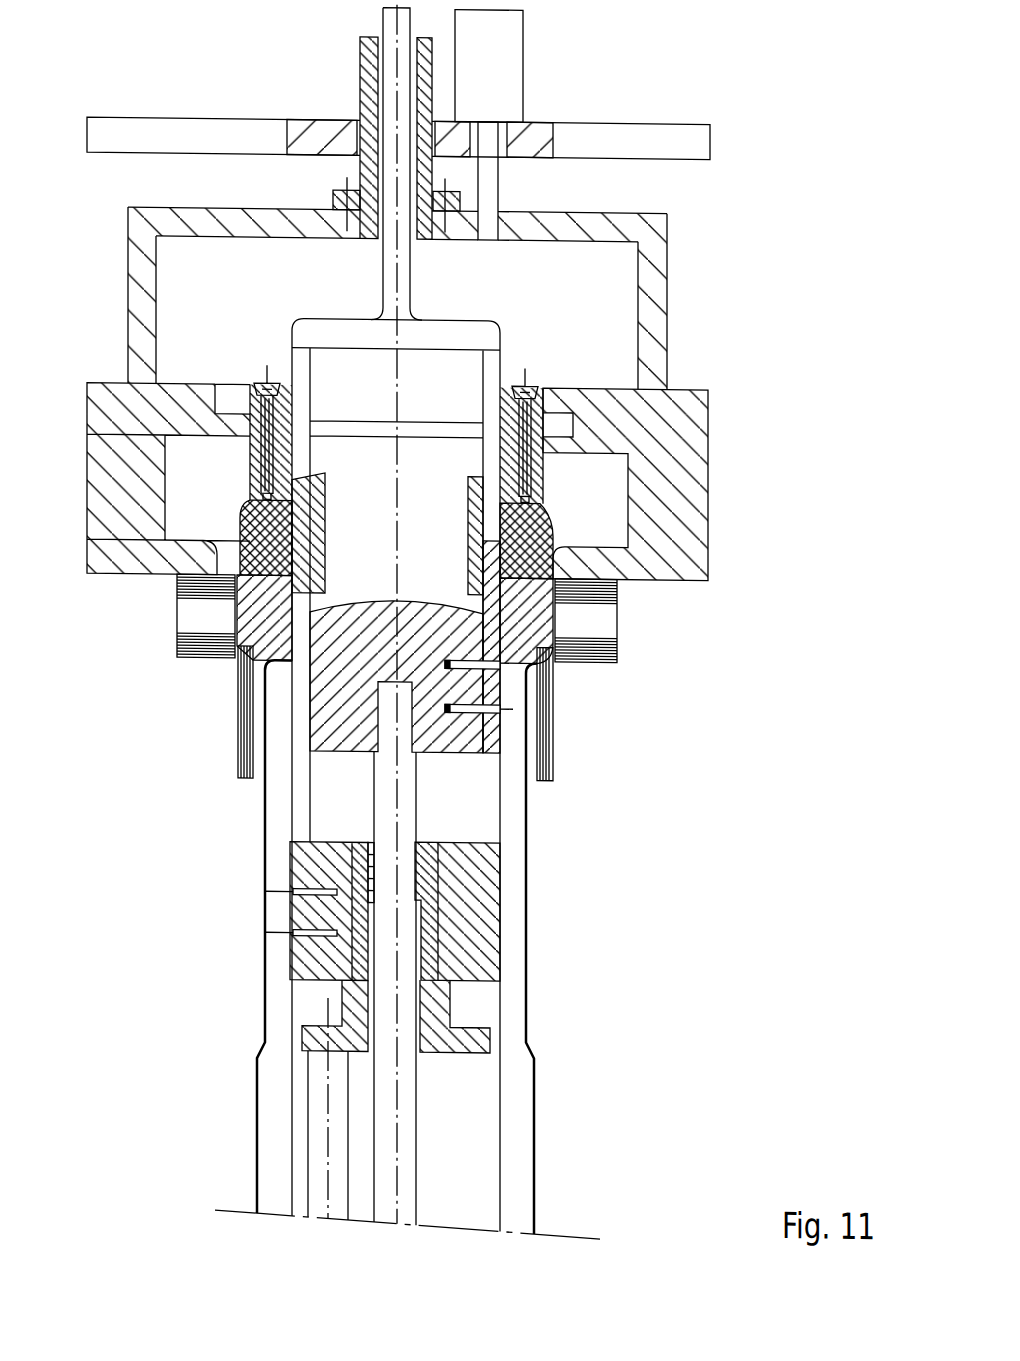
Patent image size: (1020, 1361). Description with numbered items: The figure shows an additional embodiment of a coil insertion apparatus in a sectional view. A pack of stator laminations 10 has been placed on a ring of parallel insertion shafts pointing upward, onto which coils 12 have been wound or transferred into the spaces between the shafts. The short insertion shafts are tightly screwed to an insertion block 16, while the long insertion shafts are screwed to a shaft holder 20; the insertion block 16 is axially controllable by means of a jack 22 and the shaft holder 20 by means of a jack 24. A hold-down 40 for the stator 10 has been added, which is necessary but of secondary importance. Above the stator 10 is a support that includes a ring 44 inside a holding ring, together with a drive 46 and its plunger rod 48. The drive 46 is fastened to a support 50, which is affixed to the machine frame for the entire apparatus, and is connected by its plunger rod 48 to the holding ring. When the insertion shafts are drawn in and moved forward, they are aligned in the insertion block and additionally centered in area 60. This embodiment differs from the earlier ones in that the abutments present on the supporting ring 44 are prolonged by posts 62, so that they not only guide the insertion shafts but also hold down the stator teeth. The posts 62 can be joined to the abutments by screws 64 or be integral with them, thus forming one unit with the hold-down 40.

The stator 10 is at (595, 613).
The coils 12 is at (555, 698).
The insertion block 16 is at (445, 735).
The shaft holder 20 is at (330, 851).
The jack 22 is at (412, 1076).
The jack 24 is at (317, 1077).
The hold-down 40 is at (672, 408).
The ring 44 is at (548, 425).
The drive 46 is at (500, 52).
The plunger rod 48 is at (490, 185).
The support 50 is at (672, 132).
The area 60 is at (500, 344).
The posts 62 is at (545, 478).
The screws 64 is at (525, 377).